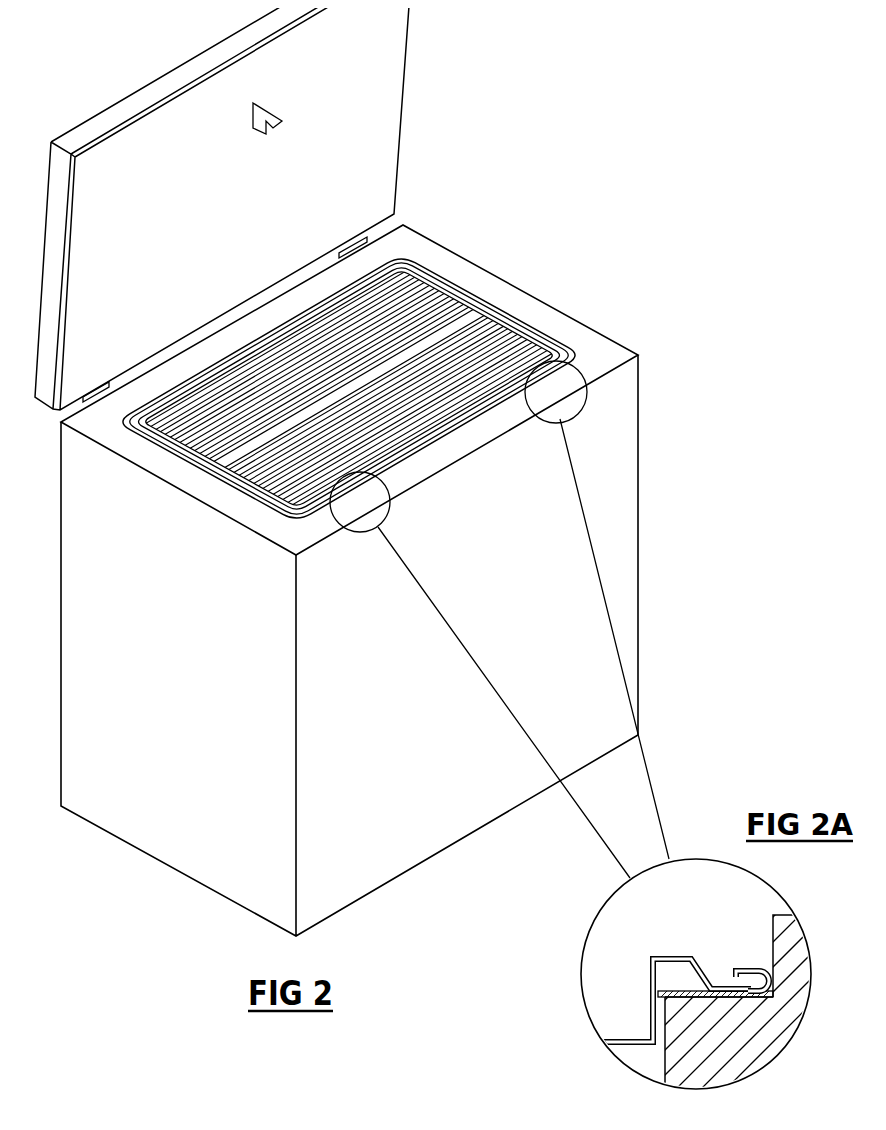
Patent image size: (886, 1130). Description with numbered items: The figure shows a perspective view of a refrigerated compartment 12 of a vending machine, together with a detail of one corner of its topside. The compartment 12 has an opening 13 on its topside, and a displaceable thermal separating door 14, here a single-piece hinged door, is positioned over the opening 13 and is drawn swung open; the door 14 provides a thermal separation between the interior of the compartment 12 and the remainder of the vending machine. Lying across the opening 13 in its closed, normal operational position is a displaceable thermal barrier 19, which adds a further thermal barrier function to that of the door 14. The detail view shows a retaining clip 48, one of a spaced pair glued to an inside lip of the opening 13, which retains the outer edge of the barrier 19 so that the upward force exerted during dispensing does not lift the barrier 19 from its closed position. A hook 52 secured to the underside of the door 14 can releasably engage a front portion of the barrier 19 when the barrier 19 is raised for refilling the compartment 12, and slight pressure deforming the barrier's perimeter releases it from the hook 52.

In FIG. 2, the refrigerated compartment 12 is at (635, 523).
In FIG. 2, the opening 13 is at (580, 338).
In FIG. 2A, the opening 13 is at (766, 938).
In FIG. 2, the thermal separating door 14 is at (402, 137).
In FIG. 2, the displaceable thermal barrier 19 is at (483, 337).
In FIG. 2A, the displaceable thermal barrier 19 is at (657, 952).
In FIG. 2A, the retaining clip 48 is at (752, 964).
In FIG. 2, the hook 52 is at (280, 114).